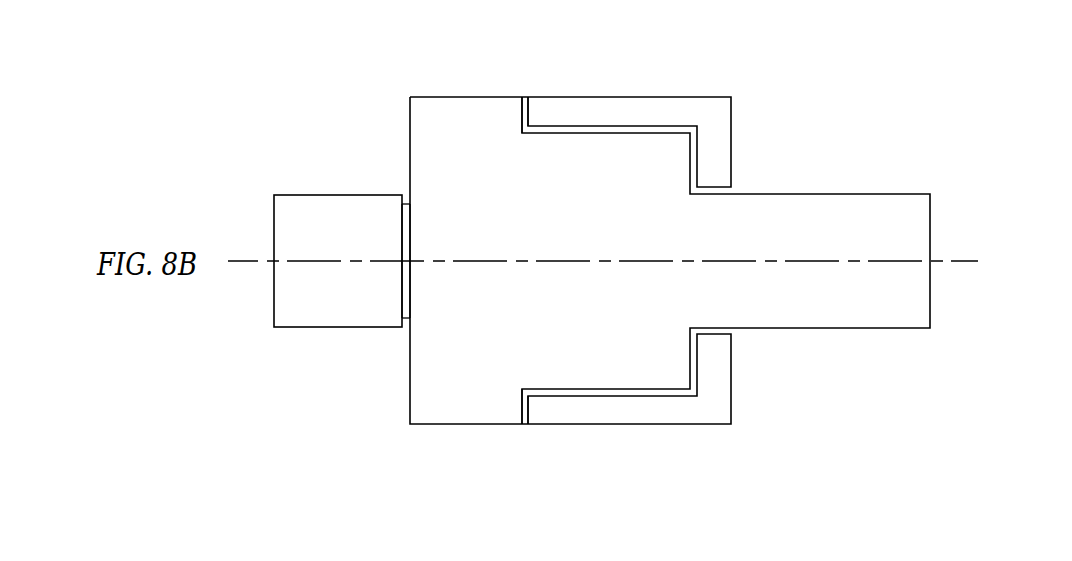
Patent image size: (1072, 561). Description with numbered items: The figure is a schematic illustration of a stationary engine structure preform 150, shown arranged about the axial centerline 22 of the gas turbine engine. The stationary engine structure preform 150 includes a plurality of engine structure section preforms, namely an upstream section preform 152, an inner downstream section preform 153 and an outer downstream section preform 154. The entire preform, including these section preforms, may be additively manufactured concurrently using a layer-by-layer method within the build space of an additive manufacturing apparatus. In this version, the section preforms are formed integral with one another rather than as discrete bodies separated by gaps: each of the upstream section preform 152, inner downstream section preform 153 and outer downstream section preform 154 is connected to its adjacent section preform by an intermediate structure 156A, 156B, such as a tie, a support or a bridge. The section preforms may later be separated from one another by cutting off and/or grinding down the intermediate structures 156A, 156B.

The axial centerline 22 is at (235, 262).
The stationary engine structure preform 150 is at (272, 98).
The upstream section preform 152 is at (334, 181).
The inner downstream section preform 153 is at (476, 85).
The outer downstream section preform 154 is at (620, 85).
The intermediate structure 156A is at (421, 224).
The intermediate structure 156B is at (509, 115).